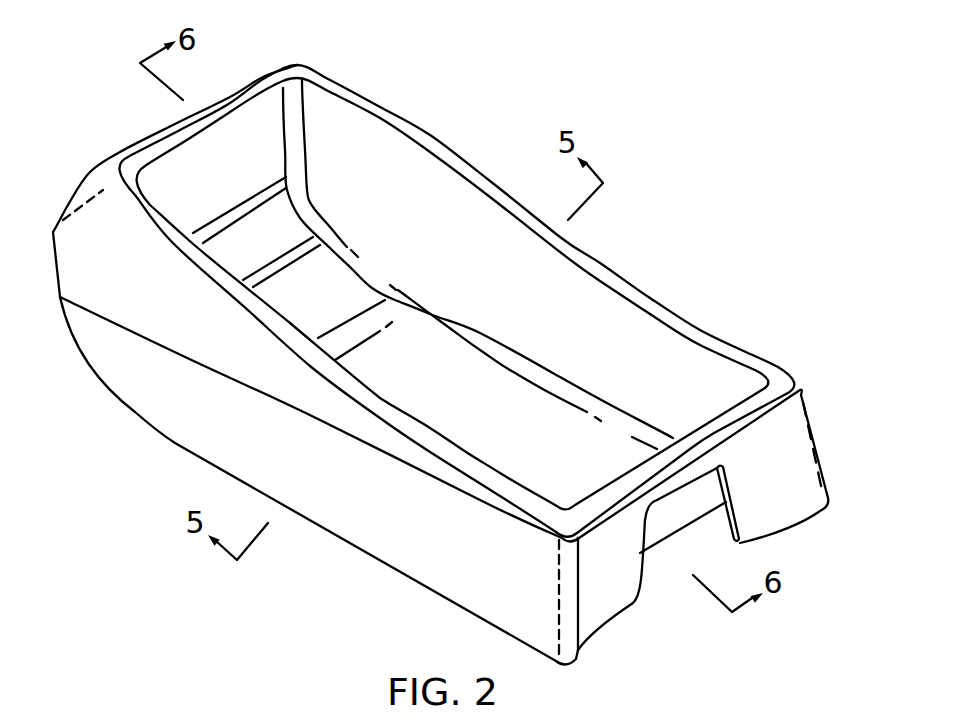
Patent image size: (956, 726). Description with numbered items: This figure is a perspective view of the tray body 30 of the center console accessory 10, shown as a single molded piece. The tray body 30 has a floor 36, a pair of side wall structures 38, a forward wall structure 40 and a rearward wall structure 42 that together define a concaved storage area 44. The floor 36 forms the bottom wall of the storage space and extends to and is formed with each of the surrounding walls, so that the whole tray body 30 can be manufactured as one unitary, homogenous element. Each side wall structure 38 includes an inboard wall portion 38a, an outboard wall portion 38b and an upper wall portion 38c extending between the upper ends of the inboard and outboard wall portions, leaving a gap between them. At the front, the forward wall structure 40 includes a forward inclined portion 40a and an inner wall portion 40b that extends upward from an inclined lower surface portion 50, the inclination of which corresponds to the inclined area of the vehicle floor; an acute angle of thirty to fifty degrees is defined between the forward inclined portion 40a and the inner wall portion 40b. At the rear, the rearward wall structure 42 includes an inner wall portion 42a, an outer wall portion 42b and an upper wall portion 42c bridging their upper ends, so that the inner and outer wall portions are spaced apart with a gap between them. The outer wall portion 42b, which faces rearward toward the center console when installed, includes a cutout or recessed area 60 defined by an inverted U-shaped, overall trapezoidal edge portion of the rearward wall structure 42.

The storage bin 10 is at (722, 232).
The tray body 30 is at (624, 266).
The floor 36 is at (580, 447).
The side wall structures 38 is at (530, 287).
The inboard wall portion 38a is at (672, 367).
The outboard wall portion 38b is at (447, 563).
The upper wall portion 38c is at (700, 332).
The forward wall structure 40 is at (247, 137).
The forward inclined portion 40a is at (128, 150).
The inner wall portion 40b is at (202, 160).
The rearward wall structure 42 is at (781, 452).
The inner wall portion 42a is at (660, 523).
The outer wall portion 42b is at (783, 487).
The upper wall portion 42c is at (723, 413).
The concaved storage area 44 is at (441, 230).
The lower surface portion 50 is at (263, 230).
The recessed area 60 is at (698, 524).